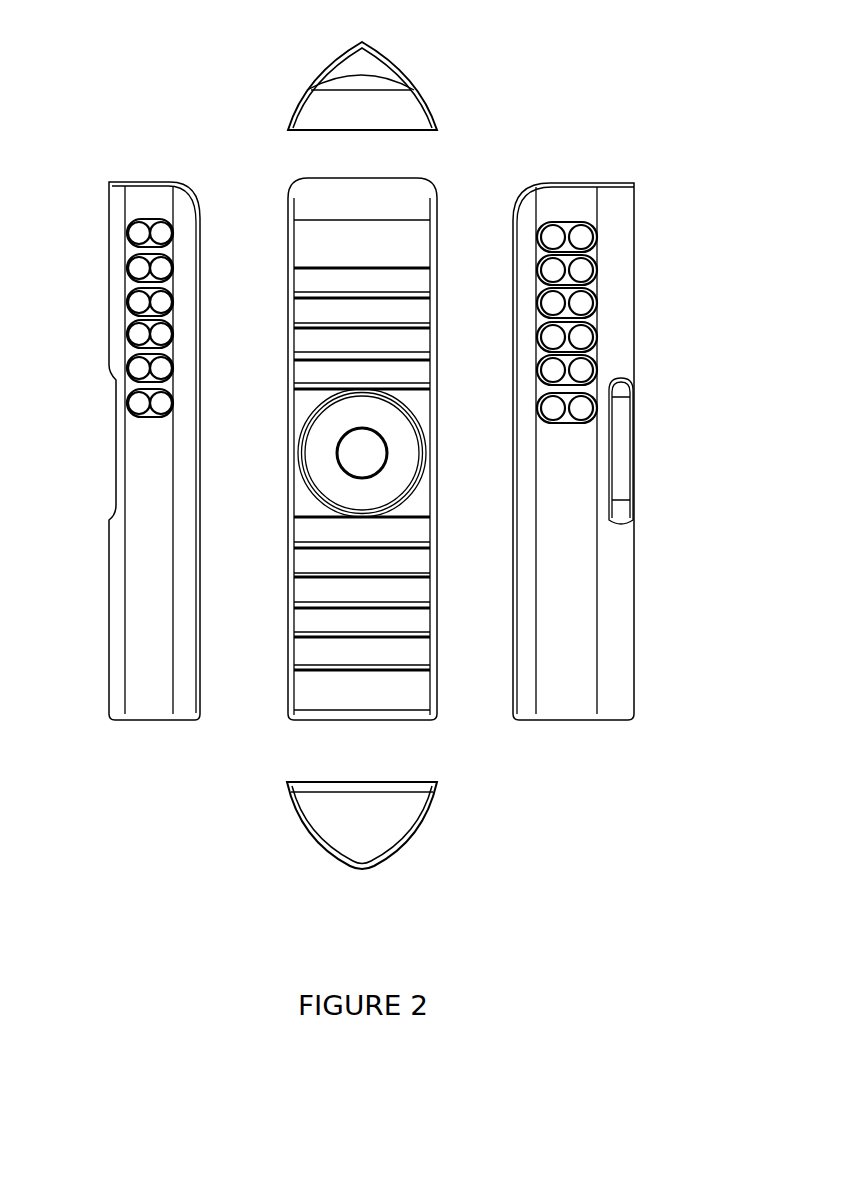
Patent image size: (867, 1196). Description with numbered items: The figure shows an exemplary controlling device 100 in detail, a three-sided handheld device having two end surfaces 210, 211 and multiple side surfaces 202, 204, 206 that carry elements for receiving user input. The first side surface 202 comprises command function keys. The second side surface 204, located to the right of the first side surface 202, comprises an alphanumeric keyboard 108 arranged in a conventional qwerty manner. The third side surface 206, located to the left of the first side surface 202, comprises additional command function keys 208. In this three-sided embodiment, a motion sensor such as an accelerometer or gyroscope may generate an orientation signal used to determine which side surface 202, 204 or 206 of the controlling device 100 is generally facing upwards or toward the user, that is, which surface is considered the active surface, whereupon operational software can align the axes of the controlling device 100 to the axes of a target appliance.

The controlling device 100 is at (378, 941).
The alphanumeric keyboard 108 is at (625, 222).
The first side surface 202 is at (375, 705).
The second side surface 204 is at (590, 490).
The third side surface 206 is at (155, 493).
The additional command function keys 208 is at (108, 228).
The end surface 210 is at (406, 68).
The end surface 211 is at (405, 838).